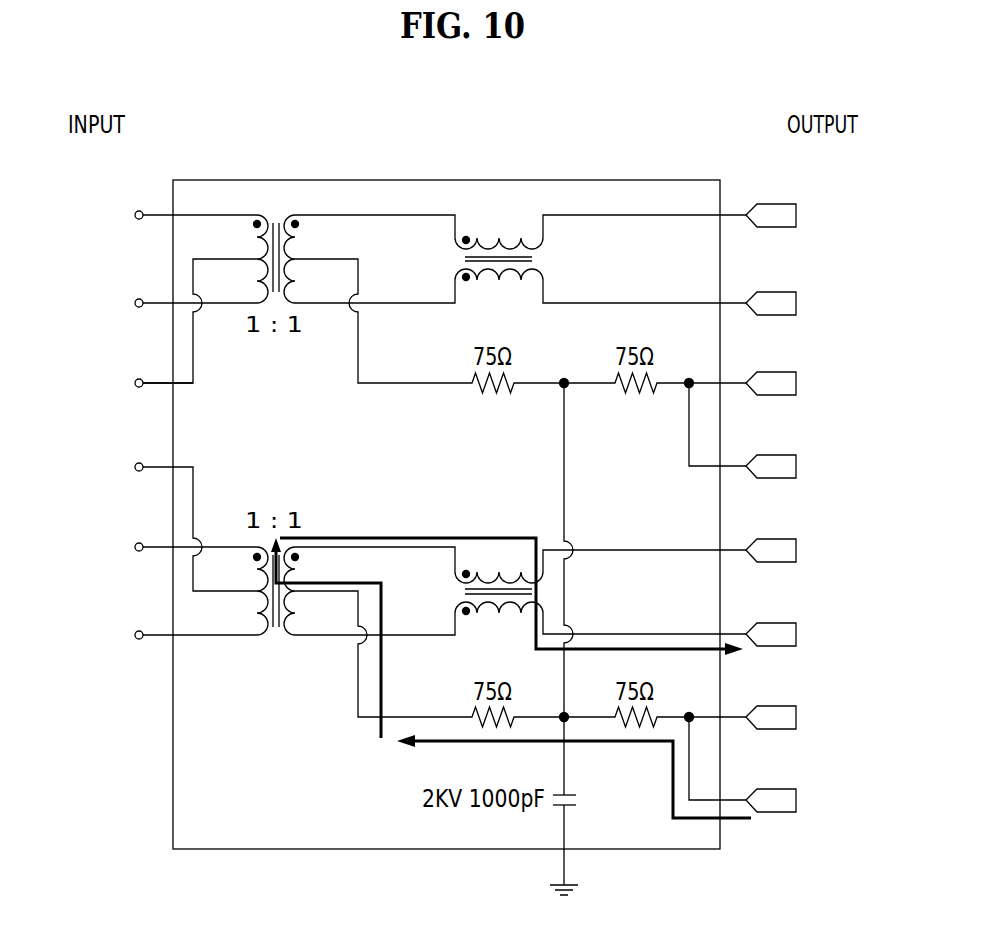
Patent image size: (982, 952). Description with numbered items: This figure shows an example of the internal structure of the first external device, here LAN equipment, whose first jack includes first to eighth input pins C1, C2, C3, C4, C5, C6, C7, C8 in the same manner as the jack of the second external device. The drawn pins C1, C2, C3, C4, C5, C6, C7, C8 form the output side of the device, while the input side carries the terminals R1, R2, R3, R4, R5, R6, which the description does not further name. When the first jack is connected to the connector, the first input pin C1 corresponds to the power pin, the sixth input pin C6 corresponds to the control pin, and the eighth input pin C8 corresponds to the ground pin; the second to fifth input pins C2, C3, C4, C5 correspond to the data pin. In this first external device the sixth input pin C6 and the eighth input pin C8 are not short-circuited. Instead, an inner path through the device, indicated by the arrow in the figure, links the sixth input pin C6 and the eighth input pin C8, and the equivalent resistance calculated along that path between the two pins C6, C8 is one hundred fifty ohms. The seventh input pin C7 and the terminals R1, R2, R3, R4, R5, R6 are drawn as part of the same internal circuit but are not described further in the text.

The TCT transmit center tap input pin R1 is at (123, 384).
The TD+ transmit data positive input pin R2 is at (155, 216).
The TD- transmit data negative input pin R3 is at (155, 304).
The RD+ receive data positive input pin R4 is at (155, 548).
The RD- receive data negative input pin R5 is at (155, 636).
The RCT receive center tap input pin R6 is at (155, 522).
The first input pin C1 is at (813, 217).
The second input pin C2 is at (813, 304).
The third input pin C3 is at (813, 552).
The fourth input pin C4 is at (788, 384).
The fifth input pin C5 is at (788, 468).
The sixth input pin C6 is at (813, 636).
The seventh input pin C7 is at (788, 719).
The eighth input pin C8 is at (788, 802).